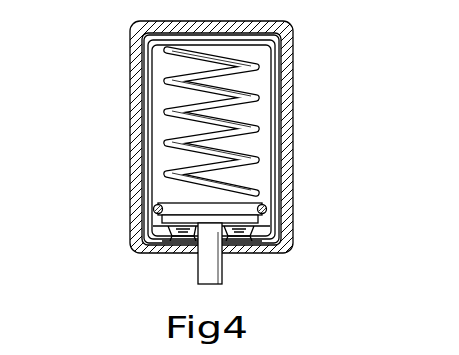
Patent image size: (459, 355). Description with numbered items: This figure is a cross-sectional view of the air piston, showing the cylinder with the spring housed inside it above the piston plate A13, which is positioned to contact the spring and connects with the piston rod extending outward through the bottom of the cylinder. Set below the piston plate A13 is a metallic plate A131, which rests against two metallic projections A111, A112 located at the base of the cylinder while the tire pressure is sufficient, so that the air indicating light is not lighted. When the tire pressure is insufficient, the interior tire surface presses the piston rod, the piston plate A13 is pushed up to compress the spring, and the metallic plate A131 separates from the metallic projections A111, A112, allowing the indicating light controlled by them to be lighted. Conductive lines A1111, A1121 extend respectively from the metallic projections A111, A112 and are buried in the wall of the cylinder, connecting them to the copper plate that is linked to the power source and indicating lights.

The conductive line A1111 is at (136, 125).
The conductive line A1121 is at (292, 124).
The piston plate A13 is at (288, 206).
The metallic plate A131 is at (263, 230).
The metallic projection A111 is at (183, 240).
The metallic projection A112 is at (262, 256).